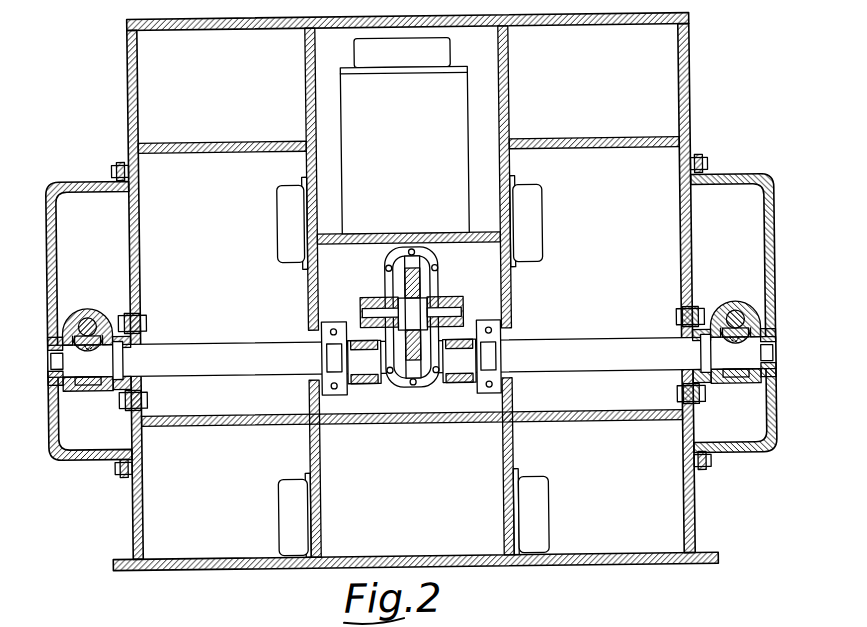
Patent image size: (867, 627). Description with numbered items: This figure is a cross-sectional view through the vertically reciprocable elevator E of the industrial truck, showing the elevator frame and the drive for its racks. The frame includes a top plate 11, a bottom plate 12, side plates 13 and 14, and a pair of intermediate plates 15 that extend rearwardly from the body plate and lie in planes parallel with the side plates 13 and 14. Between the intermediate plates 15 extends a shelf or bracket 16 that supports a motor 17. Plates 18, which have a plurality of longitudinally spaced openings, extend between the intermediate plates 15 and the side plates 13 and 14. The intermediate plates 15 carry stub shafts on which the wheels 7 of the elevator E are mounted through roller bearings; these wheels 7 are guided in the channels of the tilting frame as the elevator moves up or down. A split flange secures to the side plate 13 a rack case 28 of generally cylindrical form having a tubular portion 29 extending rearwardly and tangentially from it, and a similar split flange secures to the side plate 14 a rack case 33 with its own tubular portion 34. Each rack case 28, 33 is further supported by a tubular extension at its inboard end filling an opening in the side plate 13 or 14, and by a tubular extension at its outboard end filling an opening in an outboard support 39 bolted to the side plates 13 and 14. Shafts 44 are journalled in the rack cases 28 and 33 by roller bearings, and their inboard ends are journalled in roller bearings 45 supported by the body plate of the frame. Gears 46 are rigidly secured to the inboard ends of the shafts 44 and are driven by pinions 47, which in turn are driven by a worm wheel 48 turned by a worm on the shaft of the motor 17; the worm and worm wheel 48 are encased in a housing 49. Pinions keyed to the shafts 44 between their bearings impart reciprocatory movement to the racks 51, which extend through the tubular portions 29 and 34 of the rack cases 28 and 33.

The elevator E is at (411, 286).
The wheels 7 is at (281, 236).
The top plate 11 is at (146, 18).
The bottom plate 12 is at (623, 567).
The side plate 13 is at (130, 495).
The side plate 14 is at (693, 490).
The intermediate plates 15 is at (308, 68).
The shelf or bracket 16 is at (372, 243).
The motor 17 is at (459, 103).
The plates 18 is at (212, 120).
The rack case 28 is at (89, 388).
The tubular portion 29 is at (114, 321).
The rack case 33 is at (750, 378).
The tubular portion 34 is at (736, 306).
The outboard support 39 is at (48, 285).
The shafts 44 is at (262, 341).
The roller bearings 45 is at (500, 332).
The gears 46 is at (378, 384).
The pinions 47 is at (366, 297).
The worm wheel 48 is at (424, 388).
The housing 49 is at (432, 288).
The racks 51 is at (80, 311).